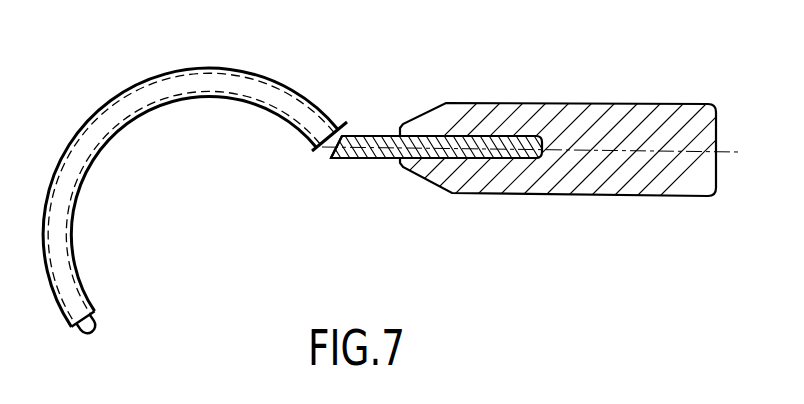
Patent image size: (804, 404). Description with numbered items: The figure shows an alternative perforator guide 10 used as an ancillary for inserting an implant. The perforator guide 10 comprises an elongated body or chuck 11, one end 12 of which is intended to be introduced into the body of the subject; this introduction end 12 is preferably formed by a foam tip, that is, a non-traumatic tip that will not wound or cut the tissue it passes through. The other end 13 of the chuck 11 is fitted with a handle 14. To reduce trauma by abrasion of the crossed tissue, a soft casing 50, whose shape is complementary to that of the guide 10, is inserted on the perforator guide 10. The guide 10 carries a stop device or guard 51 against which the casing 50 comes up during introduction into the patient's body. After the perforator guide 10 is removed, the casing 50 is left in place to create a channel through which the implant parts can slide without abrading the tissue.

The perforator guide 10 is at (404, 179).
The elongated body or chuck 11 is at (330, 157).
The introduction end 12 is at (98, 330).
The other end 13 is at (509, 135).
The handle 14 is at (647, 104).
The soft casing 50 is at (221, 66).
The stop device or guard 51 is at (343, 120).